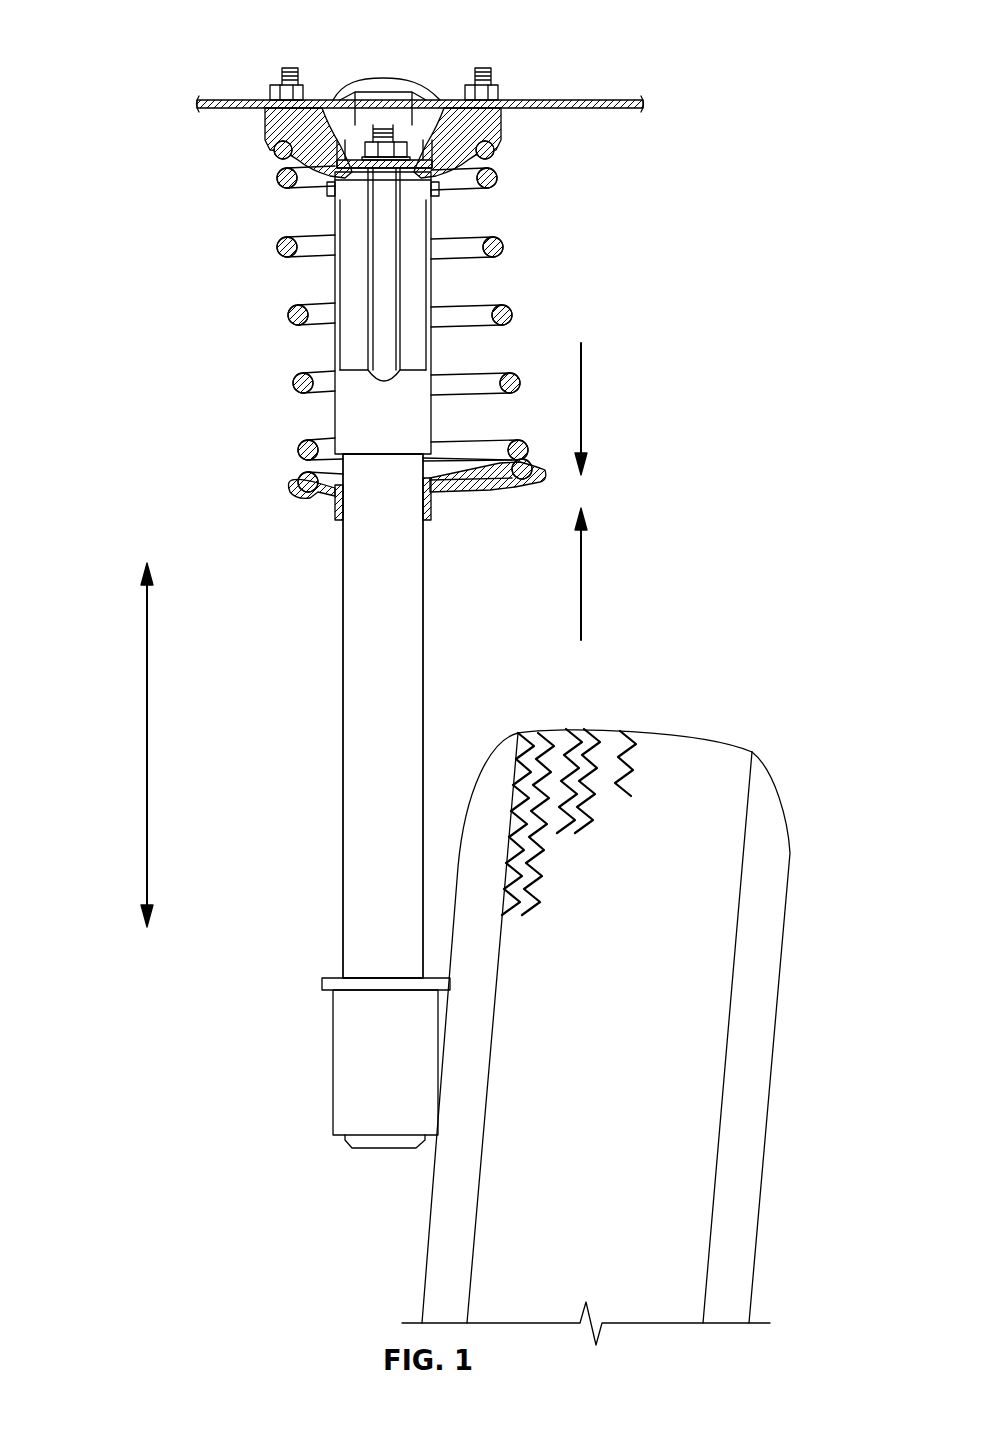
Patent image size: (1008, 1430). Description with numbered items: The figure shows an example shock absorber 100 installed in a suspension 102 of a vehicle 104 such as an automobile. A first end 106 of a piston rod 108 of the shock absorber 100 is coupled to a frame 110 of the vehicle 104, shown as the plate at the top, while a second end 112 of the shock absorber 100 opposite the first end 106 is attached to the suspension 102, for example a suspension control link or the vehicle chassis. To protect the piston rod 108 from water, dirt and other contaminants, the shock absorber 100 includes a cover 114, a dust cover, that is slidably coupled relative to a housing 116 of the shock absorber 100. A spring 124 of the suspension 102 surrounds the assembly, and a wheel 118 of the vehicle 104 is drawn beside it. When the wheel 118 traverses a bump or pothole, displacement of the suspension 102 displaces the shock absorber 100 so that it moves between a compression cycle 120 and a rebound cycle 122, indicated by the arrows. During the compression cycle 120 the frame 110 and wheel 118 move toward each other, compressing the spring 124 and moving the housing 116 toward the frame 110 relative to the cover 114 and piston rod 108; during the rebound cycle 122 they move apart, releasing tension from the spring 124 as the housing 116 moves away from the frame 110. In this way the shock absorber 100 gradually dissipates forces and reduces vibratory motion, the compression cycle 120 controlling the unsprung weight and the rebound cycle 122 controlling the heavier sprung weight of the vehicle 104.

The shock absorber 100 is at (343, 670).
The suspension 102 is at (333, 1063).
The vehicle 104 is at (636, 100).
The first end 106 is at (385, 113).
The piston rod 108 is at (395, 232).
The frame 110 is at (545, 100).
The second end 112 is at (372, 1150).
The cover 114 is at (337, 418).
The housing 116 is at (352, 815).
The wheel 118 is at (777, 1033).
The compression cycle 120 is at (581, 400).
The rebound cycle 122 is at (147, 740).
The spring 124 is at (290, 311).